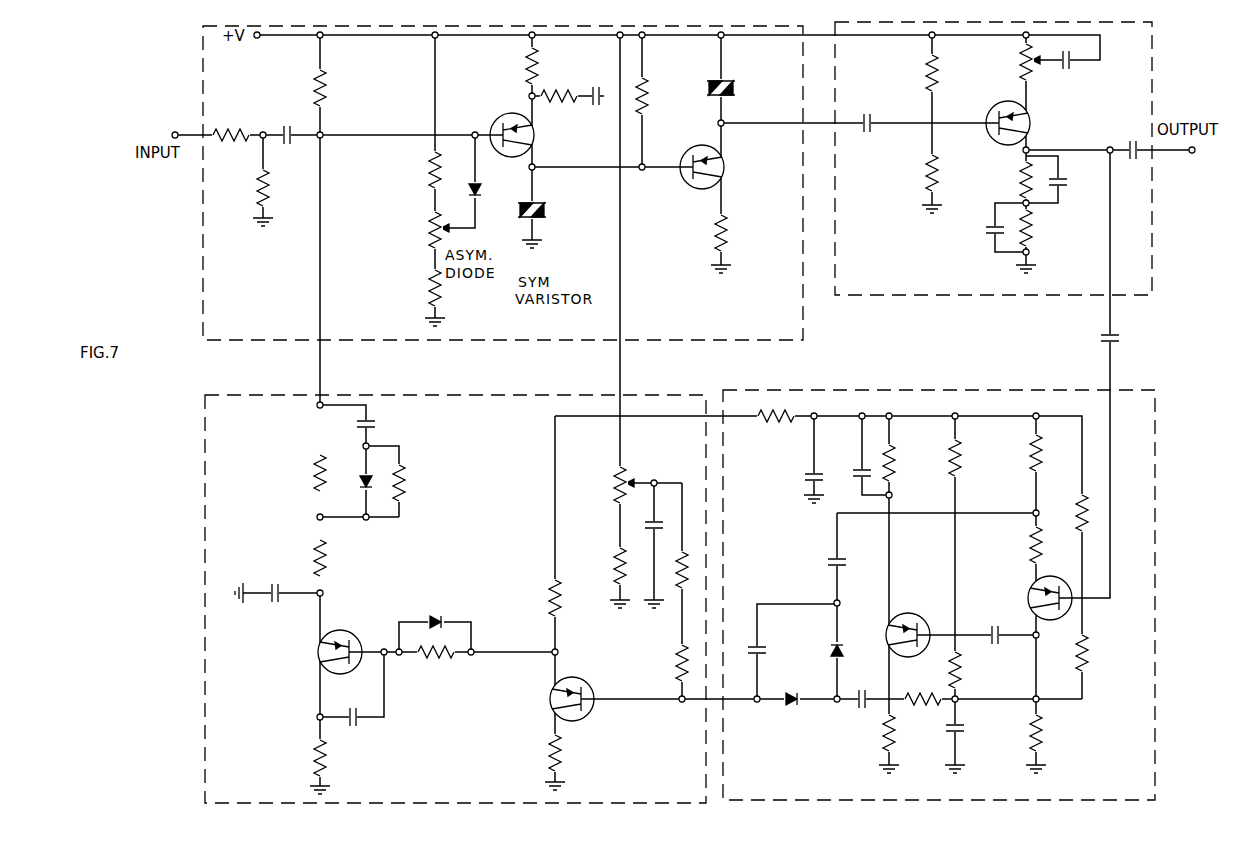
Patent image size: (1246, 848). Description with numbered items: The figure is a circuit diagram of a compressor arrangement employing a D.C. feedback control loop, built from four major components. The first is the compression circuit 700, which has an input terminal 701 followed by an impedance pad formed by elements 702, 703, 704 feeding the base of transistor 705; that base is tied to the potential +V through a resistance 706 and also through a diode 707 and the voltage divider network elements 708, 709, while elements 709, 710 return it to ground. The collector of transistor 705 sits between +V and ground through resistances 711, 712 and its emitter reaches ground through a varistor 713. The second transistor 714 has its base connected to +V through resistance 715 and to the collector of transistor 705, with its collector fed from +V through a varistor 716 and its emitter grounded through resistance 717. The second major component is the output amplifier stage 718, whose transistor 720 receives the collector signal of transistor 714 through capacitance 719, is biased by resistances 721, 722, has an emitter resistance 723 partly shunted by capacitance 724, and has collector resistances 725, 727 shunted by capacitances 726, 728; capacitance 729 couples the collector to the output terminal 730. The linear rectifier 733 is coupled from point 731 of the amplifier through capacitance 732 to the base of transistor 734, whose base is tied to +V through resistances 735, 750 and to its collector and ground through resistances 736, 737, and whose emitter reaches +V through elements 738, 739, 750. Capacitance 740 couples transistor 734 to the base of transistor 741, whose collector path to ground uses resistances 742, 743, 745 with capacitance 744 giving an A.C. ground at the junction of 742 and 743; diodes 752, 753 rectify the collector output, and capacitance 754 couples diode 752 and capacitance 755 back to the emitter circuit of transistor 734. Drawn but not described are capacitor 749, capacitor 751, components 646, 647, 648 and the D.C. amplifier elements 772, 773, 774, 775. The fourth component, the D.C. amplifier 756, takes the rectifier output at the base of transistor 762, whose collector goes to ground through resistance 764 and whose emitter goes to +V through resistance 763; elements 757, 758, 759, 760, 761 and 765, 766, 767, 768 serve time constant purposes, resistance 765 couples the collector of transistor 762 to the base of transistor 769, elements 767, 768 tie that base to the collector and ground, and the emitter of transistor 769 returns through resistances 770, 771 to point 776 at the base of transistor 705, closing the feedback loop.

The compression circuit 700 is at (550, 342).
The input terminal 701 is at (186, 134).
The impedance pad element 702 is at (249, 128).
The impedance pad element 703 is at (256, 190).
The impedance pad element 704 is at (304, 128).
The transistor 705 is at (533, 144).
The resistance 706 is at (327, 90).
The diode 707 is at (480, 194).
The voltage divider network element 708 is at (430, 172).
The voltage divider network element 709 is at (430, 236).
The voltage divider element 710 is at (429, 290).
The resistance 711 is at (526, 70).
The resistance 712 is at (582, 80).
The varistor 713 is at (544, 214).
The transistor 714 is at (726, 182).
The resistance 715 is at (646, 90).
The varistor 716 is at (738, 90).
The resistance 717 is at (728, 240).
The output amplifier stage 718 is at (1020, 297).
The capacitance 719 is at (866, 118).
The transistor 720 is at (1028, 132).
The resistance 721 is at (925, 78).
The resistance 722 is at (926, 178).
The resistance 723 is at (1020, 64).
The capacitance 724 is at (1072, 75).
The resistance 725 is at (1020, 184).
The capacitance 726 is at (1064, 182).
The resistance 727 is at (1034, 234).
The capacitance 728 is at (985, 230).
The capacitance 729 is at (1136, 142).
The output terminal 730 is at (1196, 154).
The point 731 is at (1108, 145).
The capacitance 732 is at (1120, 340).
The linear rectifier 733 is at (980, 390).
The transistor 734 is at (1022, 598).
The resistance 735 is at (1070, 506).
The resistance 736 is at (1086, 656).
The resistance 737 is at (1044, 738).
The element 738 is at (1029, 544).
The element 739 is at (1029, 450).
The capacitance 740 is at (1000, 626).
The transistor 741 is at (940, 616).
The resistance 742 is at (962, 674).
The resistance 743 is at (926, 688).
The capacitance 744 is at (950, 732).
The resistance 745 is at (882, 733).
The capacitor 749 is at (806, 476).
The resistance 750 is at (770, 410).
The capacitor 751 is at (876, 688).
The diode 752 is at (842, 648).
The diode 753 is at (786, 692).
The capacitance 754 is at (826, 564).
The capacitance 755 is at (758, 644).
The D.C. amplifier 756 is at (512, 392).
The time constant element 757 is at (675, 655).
The time constant element 758 is at (672, 590).
The time constant element 759 is at (640, 525).
The time constant element 760 is at (615, 474).
The time constant element 761 is at (614, 564).
The transistor 762 is at (588, 686).
The resistance 763 is at (549, 598).
The resistance 764 is at (562, 758).
The resistance 765 is at (442, 658).
The time constant element 766 is at (448, 603).
The element 767 is at (358, 724).
The element 768 is at (314, 758).
The transistor 769 is at (316, 658).
The resistance 770 is at (314, 562).
The resistance 771 is at (314, 472).
The capacitor 772 is at (284, 598).
The diode 773 is at (358, 486).
The resistor 774 is at (406, 482).
The capacitor 775 is at (376, 426).
The point 776 is at (323, 132).
The resistor 646 is at (948, 446).
The resistor 647 is at (892, 478).
The capacitor 648 is at (854, 476).